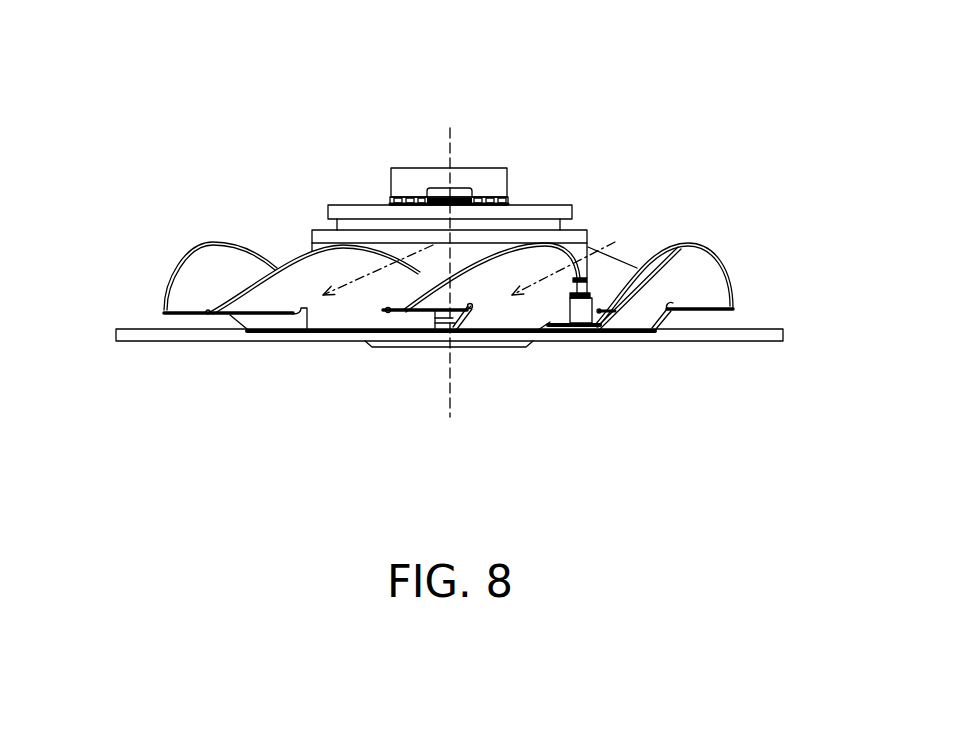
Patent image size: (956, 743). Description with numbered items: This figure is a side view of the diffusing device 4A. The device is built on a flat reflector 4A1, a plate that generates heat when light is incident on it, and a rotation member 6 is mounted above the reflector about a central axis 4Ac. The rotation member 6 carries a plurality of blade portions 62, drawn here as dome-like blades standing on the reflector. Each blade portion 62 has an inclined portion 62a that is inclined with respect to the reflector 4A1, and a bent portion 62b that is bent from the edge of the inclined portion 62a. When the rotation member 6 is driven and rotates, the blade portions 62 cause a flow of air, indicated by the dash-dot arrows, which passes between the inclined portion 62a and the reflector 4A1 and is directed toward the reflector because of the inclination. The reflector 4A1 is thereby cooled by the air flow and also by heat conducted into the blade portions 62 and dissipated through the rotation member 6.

The diffusing device 4A is at (461, 266).
The central axis of fan 4Ac is at (451, 133).
The reflector 4A1 is at (741, 342).
The rotation member 6 is at (662, 222).
The blade portion 62 is at (428, 380).
The inclined portion 62a is at (452, 297).
The bent portion 62b is at (392, 312).